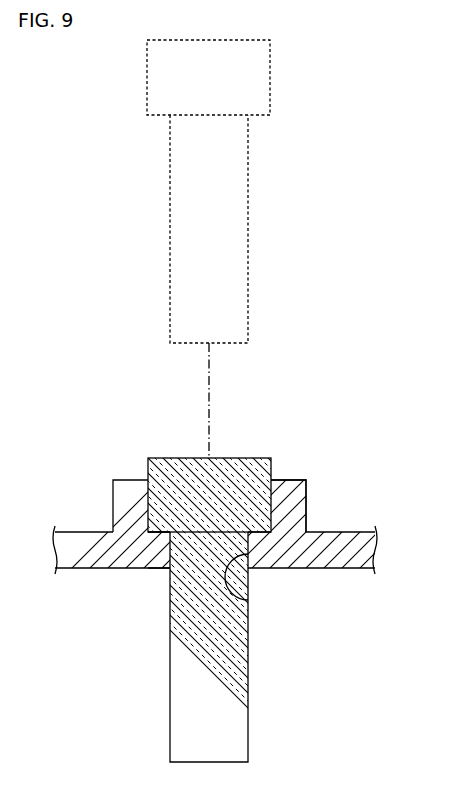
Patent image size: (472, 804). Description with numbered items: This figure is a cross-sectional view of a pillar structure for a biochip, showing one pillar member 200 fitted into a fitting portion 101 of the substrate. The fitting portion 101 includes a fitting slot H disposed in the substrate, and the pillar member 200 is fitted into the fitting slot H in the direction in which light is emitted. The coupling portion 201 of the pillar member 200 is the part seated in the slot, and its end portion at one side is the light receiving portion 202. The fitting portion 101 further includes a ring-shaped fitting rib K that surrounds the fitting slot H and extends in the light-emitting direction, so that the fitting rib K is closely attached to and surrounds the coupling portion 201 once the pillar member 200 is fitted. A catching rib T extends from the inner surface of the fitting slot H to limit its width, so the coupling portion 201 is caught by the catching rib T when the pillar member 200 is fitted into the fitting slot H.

The fitting portion 101 is at (78, 580).
The pillar member 200 is at (166, 684).
The coupling portion 201 is at (129, 480).
The light receiving portion 202 is at (254, 458).
The ring-shaped fitting rib K is at (300, 502).
The catching rib T is at (158, 548).
The fitting slot H is at (252, 602).